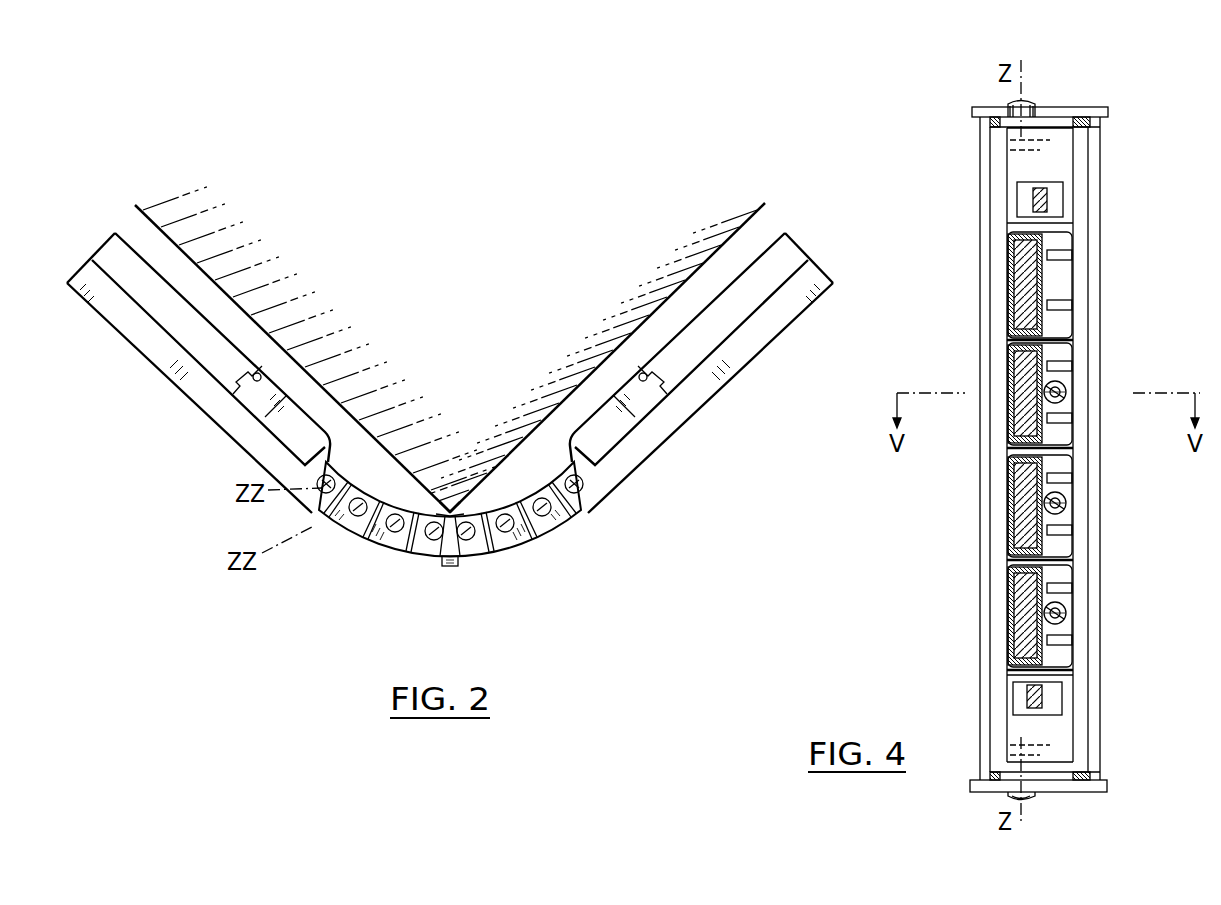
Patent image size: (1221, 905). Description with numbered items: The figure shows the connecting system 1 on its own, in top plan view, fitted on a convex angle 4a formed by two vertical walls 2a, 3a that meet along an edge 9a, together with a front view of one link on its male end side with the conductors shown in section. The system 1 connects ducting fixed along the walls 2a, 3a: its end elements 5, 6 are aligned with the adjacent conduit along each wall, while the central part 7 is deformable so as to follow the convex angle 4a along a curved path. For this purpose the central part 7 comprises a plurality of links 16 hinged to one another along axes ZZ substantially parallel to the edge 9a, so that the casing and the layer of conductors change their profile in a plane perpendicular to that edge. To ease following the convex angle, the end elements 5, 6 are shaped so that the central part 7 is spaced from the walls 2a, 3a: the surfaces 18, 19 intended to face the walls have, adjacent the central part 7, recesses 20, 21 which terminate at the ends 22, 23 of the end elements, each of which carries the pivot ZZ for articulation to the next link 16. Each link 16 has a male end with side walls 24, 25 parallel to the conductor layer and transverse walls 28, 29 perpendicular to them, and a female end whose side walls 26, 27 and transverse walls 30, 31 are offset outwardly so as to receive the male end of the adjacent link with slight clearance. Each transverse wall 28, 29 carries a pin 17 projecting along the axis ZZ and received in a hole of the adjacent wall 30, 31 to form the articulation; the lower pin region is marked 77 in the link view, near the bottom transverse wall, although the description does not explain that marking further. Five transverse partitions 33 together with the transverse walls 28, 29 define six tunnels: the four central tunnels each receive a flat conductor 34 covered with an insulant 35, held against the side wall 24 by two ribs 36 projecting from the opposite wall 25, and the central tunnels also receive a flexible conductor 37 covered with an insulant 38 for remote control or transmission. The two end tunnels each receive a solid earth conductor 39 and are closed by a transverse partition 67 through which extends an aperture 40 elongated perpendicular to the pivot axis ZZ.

In FIG. 2, the system 1 is at (665, 482).
In FIG. 2, the wall 2a is at (282, 352).
In FIG. 2, the wall 3a is at (650, 323).
In FIG. 2, the convex angle 4a is at (452, 498).
In FIG. 2, the end element 5 is at (258, 447).
In FIG. 2, the end element 6 is at (655, 423).
In FIG. 2, the central part 7 is at (417, 586).
In FIG. 2, the edge 9a is at (447, 512).
In FIG. 2, the link 16 is at (338, 527).
In FIG. 2, the pin 17 is at (320, 492).
In FIG. 4, the pin 17 is at (1033, 103).
In FIG. 2, the surface 18 is at (207, 315).
In FIG. 2, the surface 19 is at (688, 313).
In FIG. 2, the recess 20 is at (330, 440).
In FIG. 2, the recess 21 is at (572, 447).
In FIG. 2, the end 22 is at (345, 482).
In FIG. 2, the end 23 is at (548, 478).
In FIG. 4, the side wall 24 is at (995, 198).
In FIG. 4, the side wall 25 is at (1080, 192).
In FIG. 4, the side wall 26 is at (982, 130).
In FIG. 4, the side wall 27 is at (1103, 135).
In FIG. 4, the transverse wall 28 is at (1058, 777).
In FIG. 4, the transverse wall 29 is at (1093, 123).
In FIG. 4, the transverse wall 30 is at (1097, 790).
In FIG. 4, the transverse wall 31 is at (972, 105).
In FIG. 4, the transverse partition 33 is at (1013, 227).
In FIG. 4, the flat conductor 34 is at (1027, 270).
In FIG. 4, the insulant 35 is at (1043, 287).
In FIG. 4, the rib 36 is at (1062, 250).
In FIG. 4, the flexible conductor 37 is at (1065, 508).
In FIG. 4, the insulant 38 is at (1063, 493).
In FIG. 4, the solid conductor 39 is at (1033, 195).
In FIG. 4, the aperture 40 is at (1015, 188).
In FIG. 4, the transverse partition 67 is at (1057, 160).
In FIG. 4, the screw head 77 is at (1028, 800).